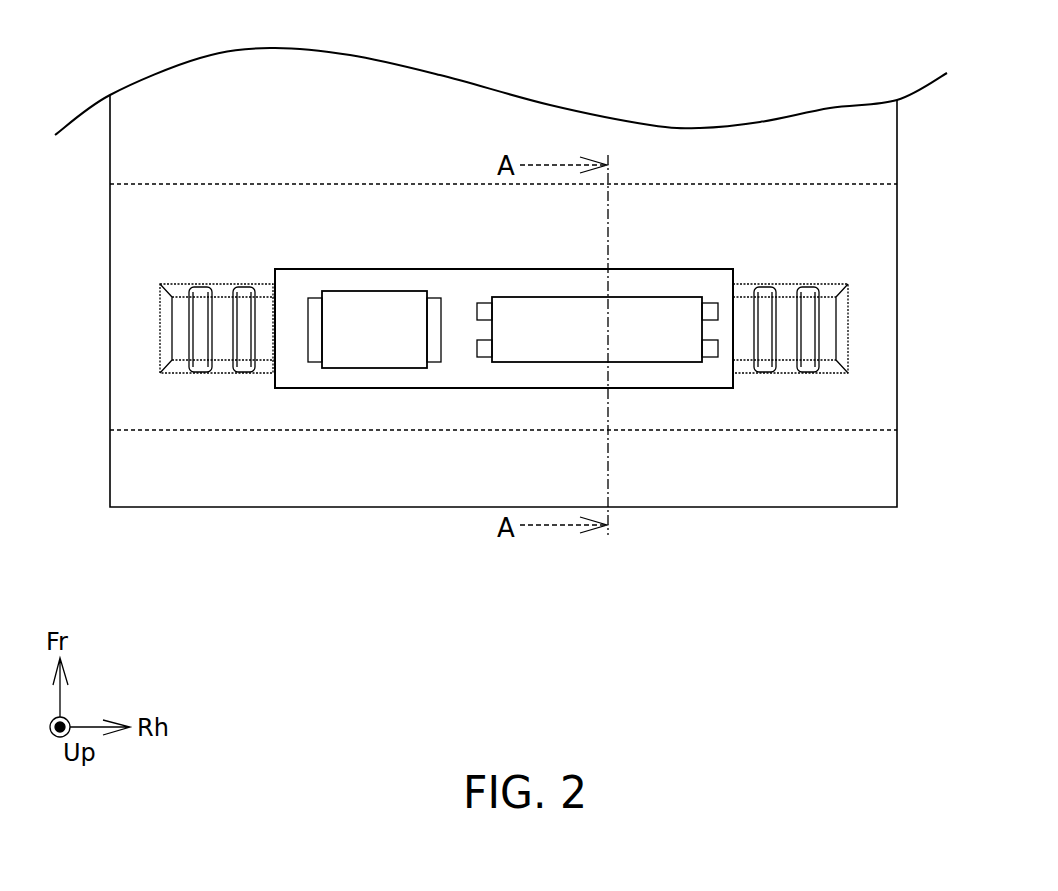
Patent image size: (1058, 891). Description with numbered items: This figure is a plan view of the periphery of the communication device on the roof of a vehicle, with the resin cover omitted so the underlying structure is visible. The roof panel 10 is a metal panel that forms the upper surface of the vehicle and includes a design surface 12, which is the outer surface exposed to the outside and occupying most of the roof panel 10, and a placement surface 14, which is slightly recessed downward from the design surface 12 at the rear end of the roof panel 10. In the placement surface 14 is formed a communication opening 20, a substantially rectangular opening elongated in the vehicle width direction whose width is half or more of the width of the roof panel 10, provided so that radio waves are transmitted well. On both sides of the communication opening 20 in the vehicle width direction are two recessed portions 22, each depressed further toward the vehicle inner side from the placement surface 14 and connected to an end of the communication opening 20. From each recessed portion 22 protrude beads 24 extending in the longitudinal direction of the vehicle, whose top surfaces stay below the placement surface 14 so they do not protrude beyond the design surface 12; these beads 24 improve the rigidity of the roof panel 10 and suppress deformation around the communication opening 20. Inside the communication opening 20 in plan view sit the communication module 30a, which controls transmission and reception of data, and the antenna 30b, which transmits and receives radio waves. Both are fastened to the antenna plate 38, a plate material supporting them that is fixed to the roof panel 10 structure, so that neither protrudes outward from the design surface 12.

The roof panel 10 is at (295, 527).
The design surface 12 is at (337, 124).
The placement surface 14 is at (348, 239).
The communication opening 20 is at (452, 272).
The recessed portion 22 is at (180, 351).
The bead 24 is at (245, 360).
The communication module 30a is at (374, 355).
The antenna 30b is at (650, 350).
The antenna plate 38 is at (412, 377).